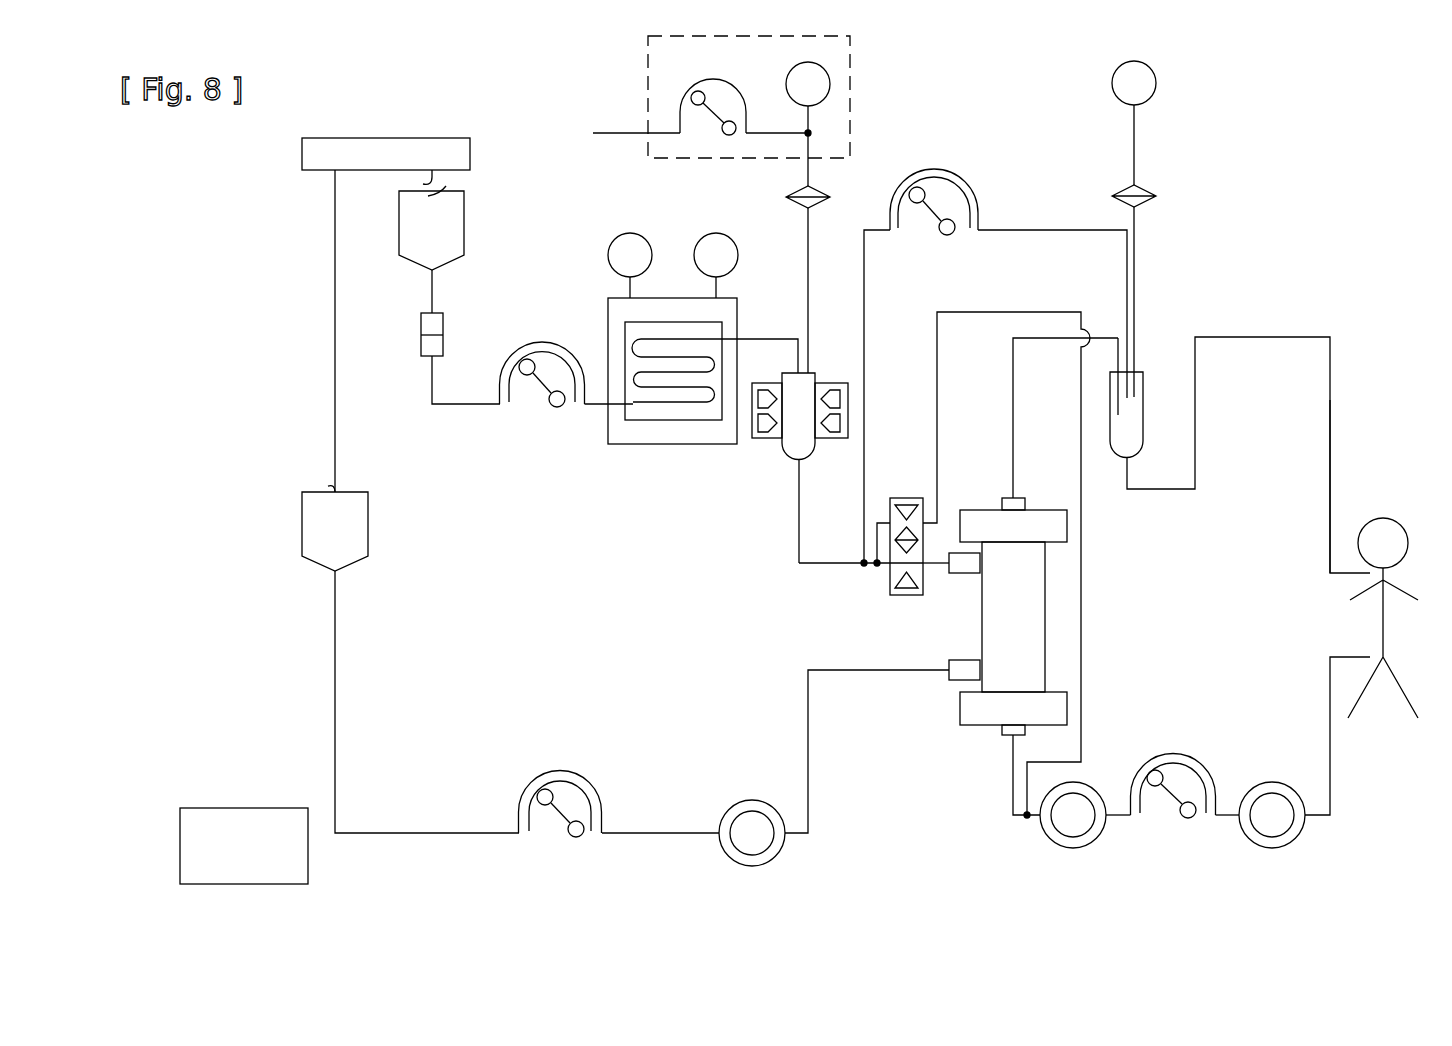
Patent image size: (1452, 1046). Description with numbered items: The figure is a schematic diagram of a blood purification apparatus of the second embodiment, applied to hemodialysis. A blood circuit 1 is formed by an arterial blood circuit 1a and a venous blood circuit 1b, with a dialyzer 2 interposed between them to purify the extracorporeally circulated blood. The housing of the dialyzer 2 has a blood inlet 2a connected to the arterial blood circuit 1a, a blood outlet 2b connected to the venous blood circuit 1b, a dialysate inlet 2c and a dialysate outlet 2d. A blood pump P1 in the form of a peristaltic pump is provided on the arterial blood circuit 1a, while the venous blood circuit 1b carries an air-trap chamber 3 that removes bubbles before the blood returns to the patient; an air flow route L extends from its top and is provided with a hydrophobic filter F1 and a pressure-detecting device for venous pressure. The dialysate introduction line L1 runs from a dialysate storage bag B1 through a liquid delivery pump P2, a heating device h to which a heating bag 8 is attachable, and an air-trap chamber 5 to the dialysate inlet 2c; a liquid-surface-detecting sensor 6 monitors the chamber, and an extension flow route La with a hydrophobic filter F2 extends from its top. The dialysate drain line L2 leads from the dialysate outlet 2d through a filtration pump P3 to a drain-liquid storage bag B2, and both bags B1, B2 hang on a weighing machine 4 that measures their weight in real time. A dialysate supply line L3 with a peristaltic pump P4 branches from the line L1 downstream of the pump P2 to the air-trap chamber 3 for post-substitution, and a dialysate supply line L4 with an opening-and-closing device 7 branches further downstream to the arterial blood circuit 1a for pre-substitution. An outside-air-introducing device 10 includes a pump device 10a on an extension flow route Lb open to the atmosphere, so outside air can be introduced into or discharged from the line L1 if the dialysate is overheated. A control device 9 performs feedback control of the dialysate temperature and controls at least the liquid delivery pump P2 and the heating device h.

The blood circuit 1 is at (1340, 481).
The arterial blood circuit 1a is at (1330, 760).
The venous blood circuit 1b is at (1330, 410).
The dialyzer 2 is at (1054, 604).
The blood inlet 2a is at (1000, 732).
The blood outlet 2b is at (1022, 498).
The dialysate inlet 2c is at (962, 573).
The dialysate outlet 2d is at (960, 663).
The air-trap chamber 3 is at (1110, 397).
The weighing machine 4 is at (380, 138).
The air-trap chamber 5 is at (815, 378).
The liquid-surface-detecting sensor 6 is at (769, 440).
The opening-and-closing device 7 is at (910, 498).
The heating bag 8 is at (683, 420).
The control device 9 is at (180, 866).
The outside-air-introducing device 10 is at (852, 68).
The pump device 10a is at (678, 107).
The dialysate storage bag B1 is at (464, 207).
The drain-liquid storage bag B2 is at (368, 515).
The hydrophobic filter F1 is at (1157, 196).
The hydrophobic filter F2 is at (786, 197).
The air flow route L is at (1137, 279).
The dialysate introduction line L1 is at (826, 565).
The dialysate drain line L2 is at (810, 752).
The dialysate supply line L3 is at (1047, 230).
The dialysate supply line L4 is at (1084, 672).
The extension flow route La is at (806, 228).
The extension flow route Lb is at (605, 145).
The blood pump P1 is at (1160, 820).
The liquid delivery pump P2 is at (538, 412).
The filtration pump P3 is at (556, 840).
The peristaltic pump P4 is at (912, 234).
The heating device h is at (670, 298).